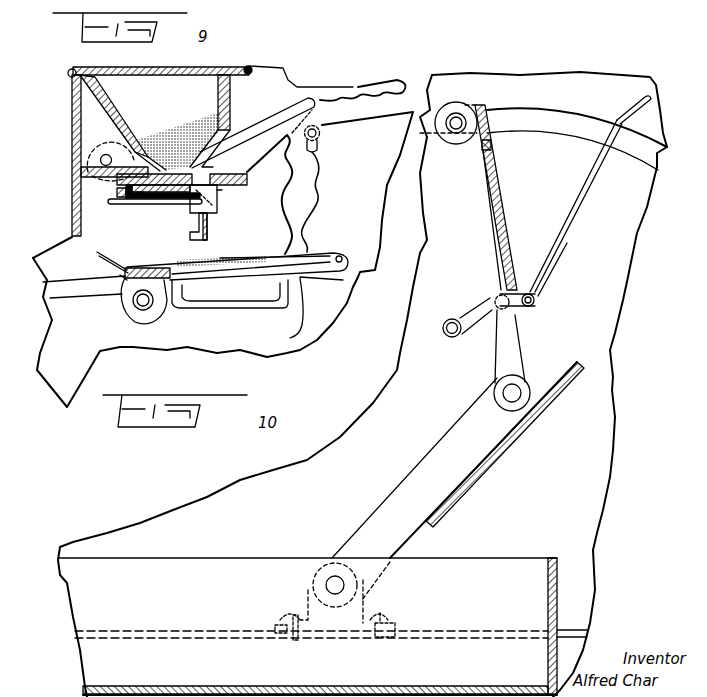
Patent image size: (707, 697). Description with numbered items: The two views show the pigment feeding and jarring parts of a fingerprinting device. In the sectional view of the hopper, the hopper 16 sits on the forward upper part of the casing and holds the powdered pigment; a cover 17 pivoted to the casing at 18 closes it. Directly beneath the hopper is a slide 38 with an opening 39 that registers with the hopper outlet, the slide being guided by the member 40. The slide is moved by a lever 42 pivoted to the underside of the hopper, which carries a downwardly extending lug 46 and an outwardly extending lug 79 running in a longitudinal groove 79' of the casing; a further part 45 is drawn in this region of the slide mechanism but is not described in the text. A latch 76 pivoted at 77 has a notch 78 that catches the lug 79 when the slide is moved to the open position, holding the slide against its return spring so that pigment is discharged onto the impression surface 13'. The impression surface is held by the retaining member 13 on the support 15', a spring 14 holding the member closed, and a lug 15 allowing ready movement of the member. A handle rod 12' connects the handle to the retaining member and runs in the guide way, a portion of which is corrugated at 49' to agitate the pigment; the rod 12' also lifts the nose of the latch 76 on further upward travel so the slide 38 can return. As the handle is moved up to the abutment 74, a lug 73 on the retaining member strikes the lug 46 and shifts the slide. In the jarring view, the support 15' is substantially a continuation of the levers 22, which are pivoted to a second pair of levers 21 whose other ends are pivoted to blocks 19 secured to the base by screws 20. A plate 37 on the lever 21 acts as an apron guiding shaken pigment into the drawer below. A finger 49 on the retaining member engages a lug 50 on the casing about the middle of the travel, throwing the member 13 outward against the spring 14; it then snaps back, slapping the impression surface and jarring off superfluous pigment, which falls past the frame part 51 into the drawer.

In FIG. 9, the rod 12' is at (238, 237).
In FIG. 10, the rod 12' is at (449, 113).
In FIG. 9, the retaining member 13 is at (237, 253).
In FIG. 10, the retaining member 13 is at (576, 208).
In FIG. 9, the impression surface 13' is at (275, 247).
In FIG. 10, the impression surface 13' is at (514, 197).
In FIG. 10, the spring 14 is at (545, 293).
In FIG. 9, the lug 15 is at (95, 261).
In FIG. 10, the lug 15 is at (591, 133).
In FIG. 9, the support 15' is at (101, 285).
In FIG. 10, the support 15' is at (468, 162).
In FIG. 9, the hopper 16 is at (80, 108).
In FIG. 9, the cover 17 is at (70, 70).
In FIG. 9, the pivot 18 is at (250, 66).
In FIG. 10, the blocks 19 is at (367, 600).
In FIG. 10, the screws 20 is at (393, 617).
In FIG. 10, the levers 21 is at (432, 450).
In FIG. 10, the levers 22 is at (512, 337).
In FIG. 10, the plate 37 is at (490, 468).
In FIG. 9, the slide 38 is at (248, 178).
In FIG. 9, the opening 39 is at (212, 167).
In FIG. 9, the member 40 is at (120, 187).
In FIG. 9, the lever 42 is at (172, 199).
In FIG. 9, the spring 45 is at (140, 200).
In FIG. 9, the downwardly extending lug 46 is at (208, 230).
In FIG. 10, the finger 49 is at (473, 308).
In FIG. 9, the corrugated portion of guide way 49' is at (362, 76).
In FIG. 10, the lug 50 is at (443, 337).
In FIG. 10, the frame 51 is at (545, 558).
In FIG. 9, the lug 73 is at (180, 260).
In FIG. 9, the abutment 74 is at (180, 287).
In FIG. 9, the latch 76 is at (261, 140).
In FIG. 9, the pivot 77 is at (98, 158).
In FIG. 9, the notch 78 is at (218, 206).
In FIG. 9, the lug 79 is at (243, 198).
In FIG. 9, the groove 79' is at (148, 219).